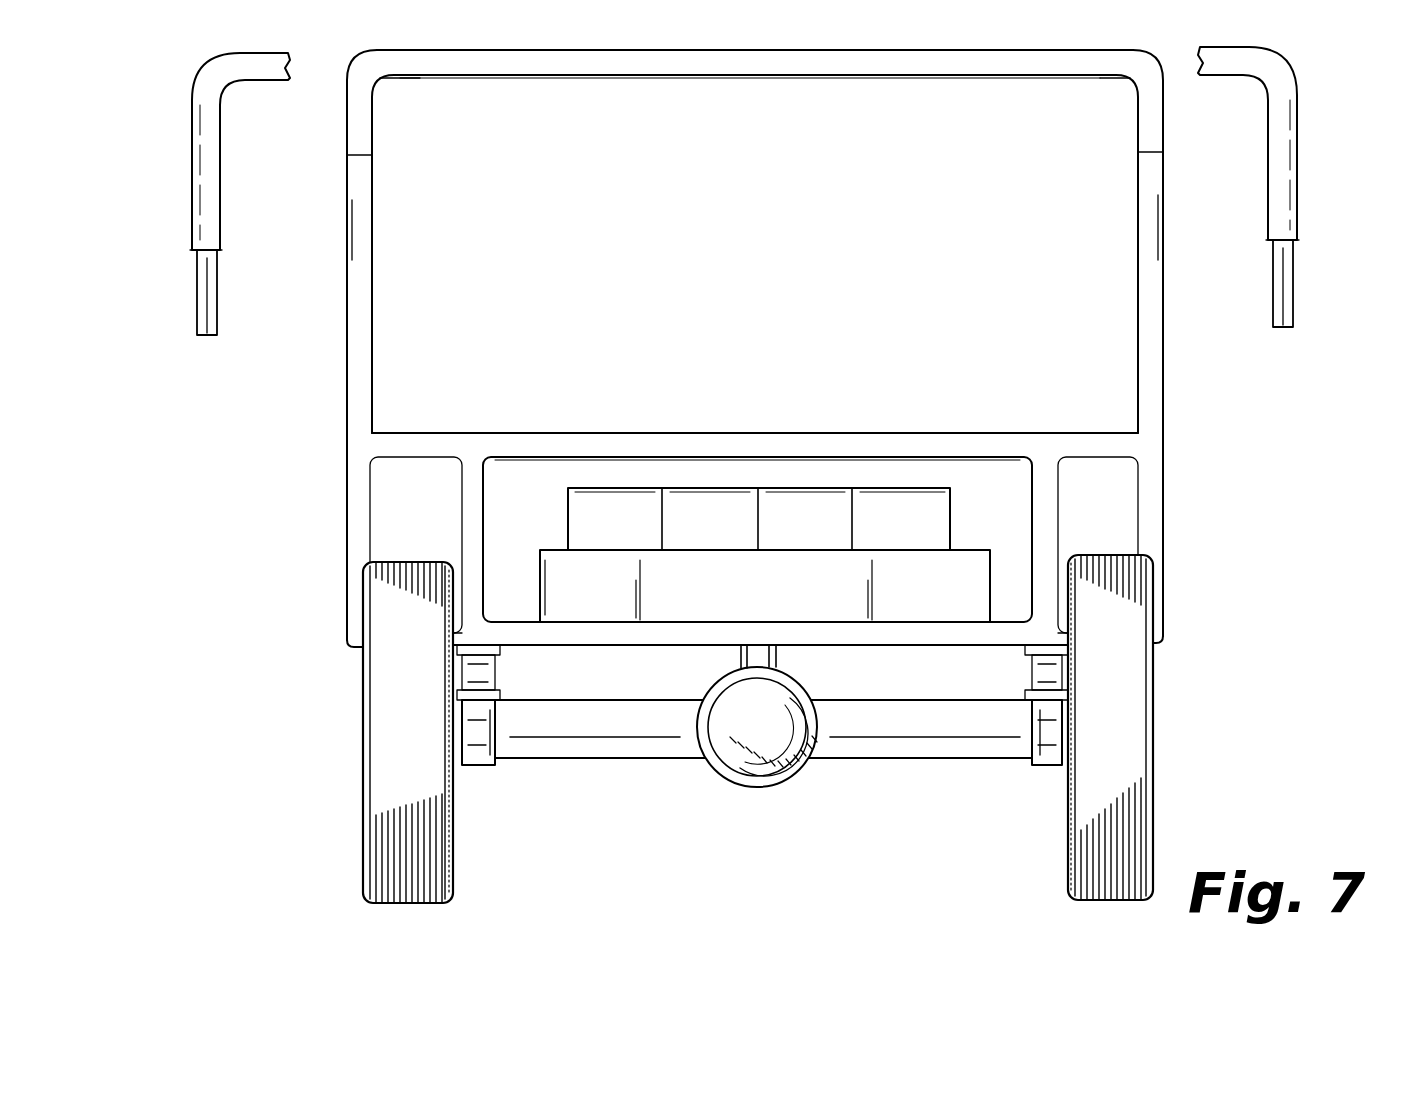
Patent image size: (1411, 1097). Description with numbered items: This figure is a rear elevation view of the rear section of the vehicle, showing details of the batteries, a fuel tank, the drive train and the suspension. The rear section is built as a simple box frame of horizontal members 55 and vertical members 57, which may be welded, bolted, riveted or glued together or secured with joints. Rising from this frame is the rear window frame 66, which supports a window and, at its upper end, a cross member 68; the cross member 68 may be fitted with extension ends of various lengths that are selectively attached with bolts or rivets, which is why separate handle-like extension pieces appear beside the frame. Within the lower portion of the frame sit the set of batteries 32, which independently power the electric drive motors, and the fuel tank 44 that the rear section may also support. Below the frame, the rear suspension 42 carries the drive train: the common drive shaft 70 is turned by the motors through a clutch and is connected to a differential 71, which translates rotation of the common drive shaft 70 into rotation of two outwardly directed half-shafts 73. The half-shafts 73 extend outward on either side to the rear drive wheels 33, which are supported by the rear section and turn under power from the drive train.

The batteries 32 is at (930, 516).
The drive wheels 33 is at (362, 815).
The rear suspension 42 is at (490, 681).
The fuel tank 44 is at (776, 603).
The horizontal members 55 is at (596, 447).
The vertical members 57 is at (478, 524).
The rear window frame 66 is at (366, 289).
The cross member 68 is at (190, 210).
The common drive shaft 70 is at (778, 657).
The differential 71 is at (768, 740).
The half-shafts 73 is at (602, 735).